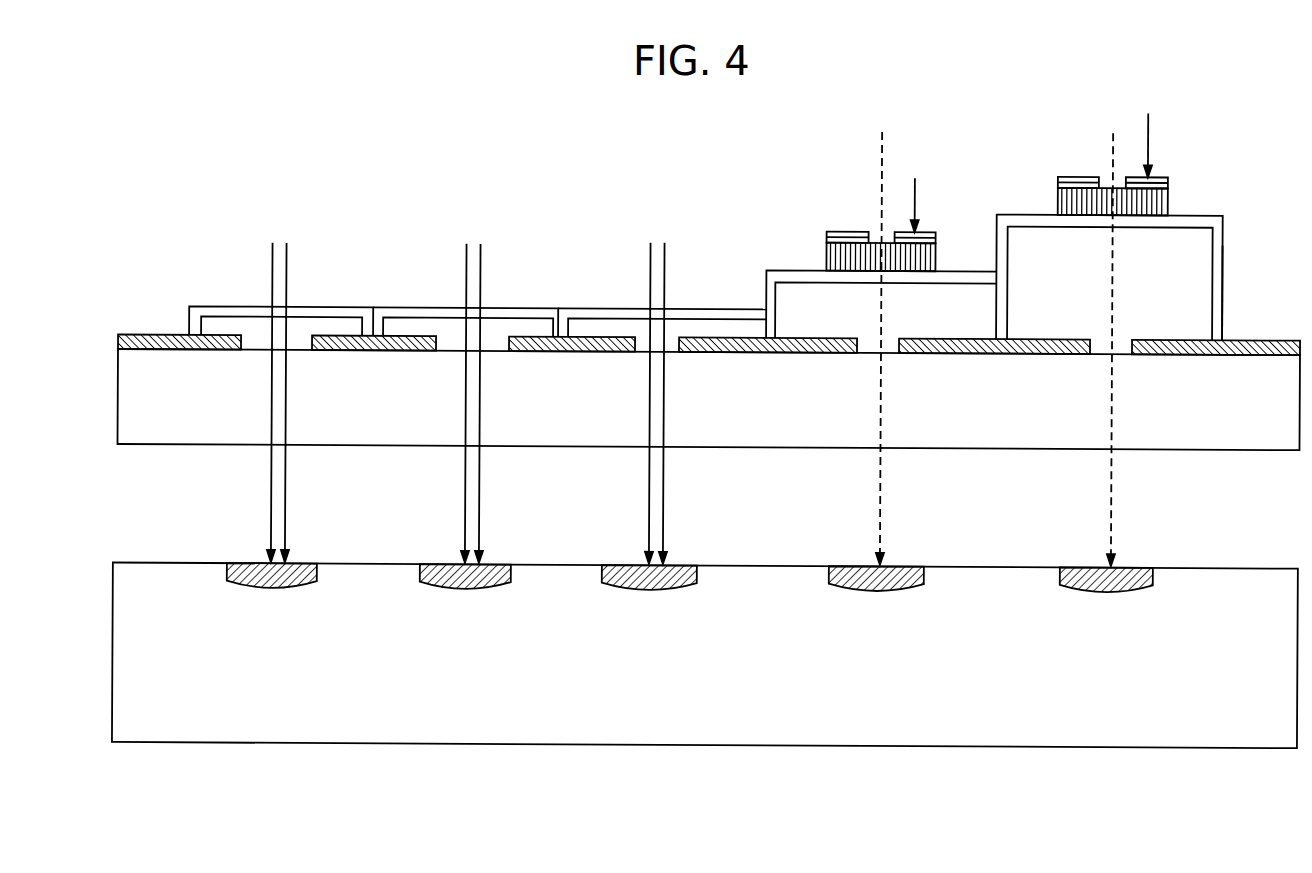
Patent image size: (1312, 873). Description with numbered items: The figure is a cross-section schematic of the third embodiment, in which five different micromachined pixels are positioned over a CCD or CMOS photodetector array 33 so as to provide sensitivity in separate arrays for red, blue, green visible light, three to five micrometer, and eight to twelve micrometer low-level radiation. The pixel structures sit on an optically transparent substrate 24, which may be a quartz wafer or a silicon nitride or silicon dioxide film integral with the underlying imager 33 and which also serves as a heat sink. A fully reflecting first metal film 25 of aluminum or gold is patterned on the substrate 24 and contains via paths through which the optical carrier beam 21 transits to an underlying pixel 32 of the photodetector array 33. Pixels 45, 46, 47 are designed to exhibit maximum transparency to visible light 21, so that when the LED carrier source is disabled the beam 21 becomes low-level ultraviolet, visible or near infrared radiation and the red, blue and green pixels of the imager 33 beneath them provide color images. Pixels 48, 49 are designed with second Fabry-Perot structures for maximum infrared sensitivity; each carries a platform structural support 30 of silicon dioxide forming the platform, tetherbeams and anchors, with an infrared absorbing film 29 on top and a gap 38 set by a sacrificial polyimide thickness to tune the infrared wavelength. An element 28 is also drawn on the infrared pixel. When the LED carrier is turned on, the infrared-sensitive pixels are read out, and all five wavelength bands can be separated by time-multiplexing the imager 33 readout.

The optical carrier beam 21 is at (694, 331).
The substrate 24 is at (1219, 446).
The first metal film 25 is at (173, 333).
The light-emitting element 28 is at (826, 254).
The infrared absorbing film 29 is at (1160, 167).
The platform structural support 30 is at (1223, 246).
The pixel 32 is at (617, 584).
The photodetector array 33 is at (1228, 744).
The gap 38 is at (1149, 133).
The pixel 45 is at (232, 306).
The pixel 46 is at (418, 304).
The pixel 47 is at (605, 304).
The pixel 48 is at (781, 266).
The pixel 49 is at (1027, 209).